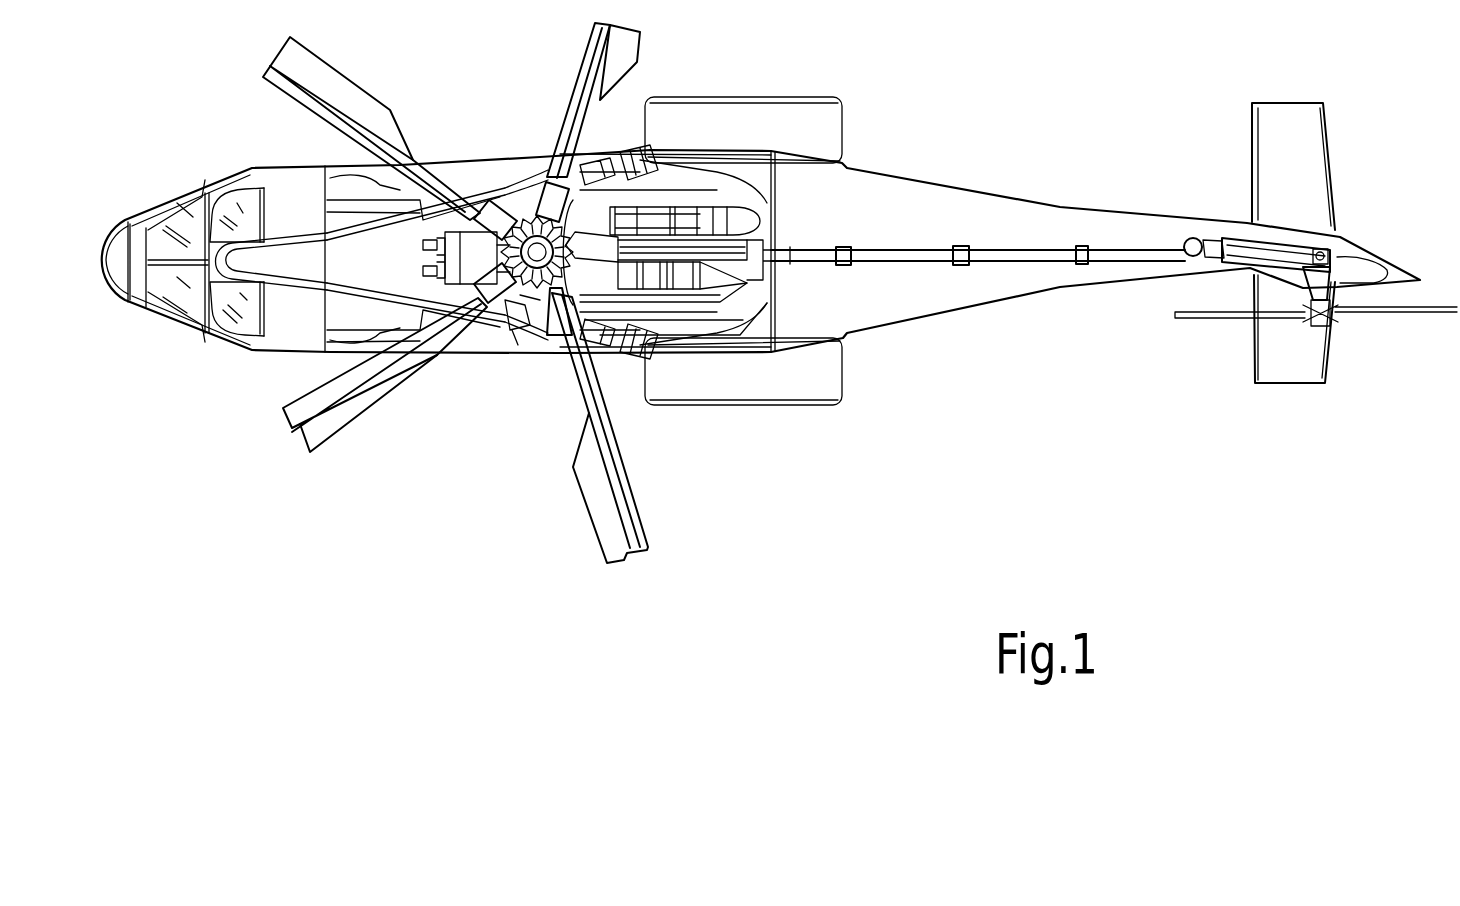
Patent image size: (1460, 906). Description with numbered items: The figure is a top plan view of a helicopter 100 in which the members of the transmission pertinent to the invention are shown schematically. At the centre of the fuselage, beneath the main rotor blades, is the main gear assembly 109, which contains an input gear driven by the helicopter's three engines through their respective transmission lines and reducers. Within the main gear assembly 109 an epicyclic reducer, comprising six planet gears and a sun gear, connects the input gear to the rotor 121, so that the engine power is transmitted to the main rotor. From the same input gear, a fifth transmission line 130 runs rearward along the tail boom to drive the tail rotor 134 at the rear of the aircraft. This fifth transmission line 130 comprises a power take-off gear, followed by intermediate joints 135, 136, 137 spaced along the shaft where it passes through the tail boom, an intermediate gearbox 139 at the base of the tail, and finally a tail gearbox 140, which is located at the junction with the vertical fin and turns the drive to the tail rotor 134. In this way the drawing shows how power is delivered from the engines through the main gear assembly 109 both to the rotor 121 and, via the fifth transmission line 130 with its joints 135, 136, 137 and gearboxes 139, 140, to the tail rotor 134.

The helicopter 100 is at (1100, 102).
The main gear assembly 109 is at (512, 190).
The rotor 121 is at (535, 335).
The fifth transmission line 130 is at (1029, 240).
The tail rotor 134 is at (1340, 320).
The intermediate joint 135 is at (848, 270).
The intermediate joint 136 is at (965, 270).
The intermediate joint 137 is at (1085, 268).
The intermediate gearbox 139 is at (1200, 232).
The tail gearbox 140 is at (1348, 233).